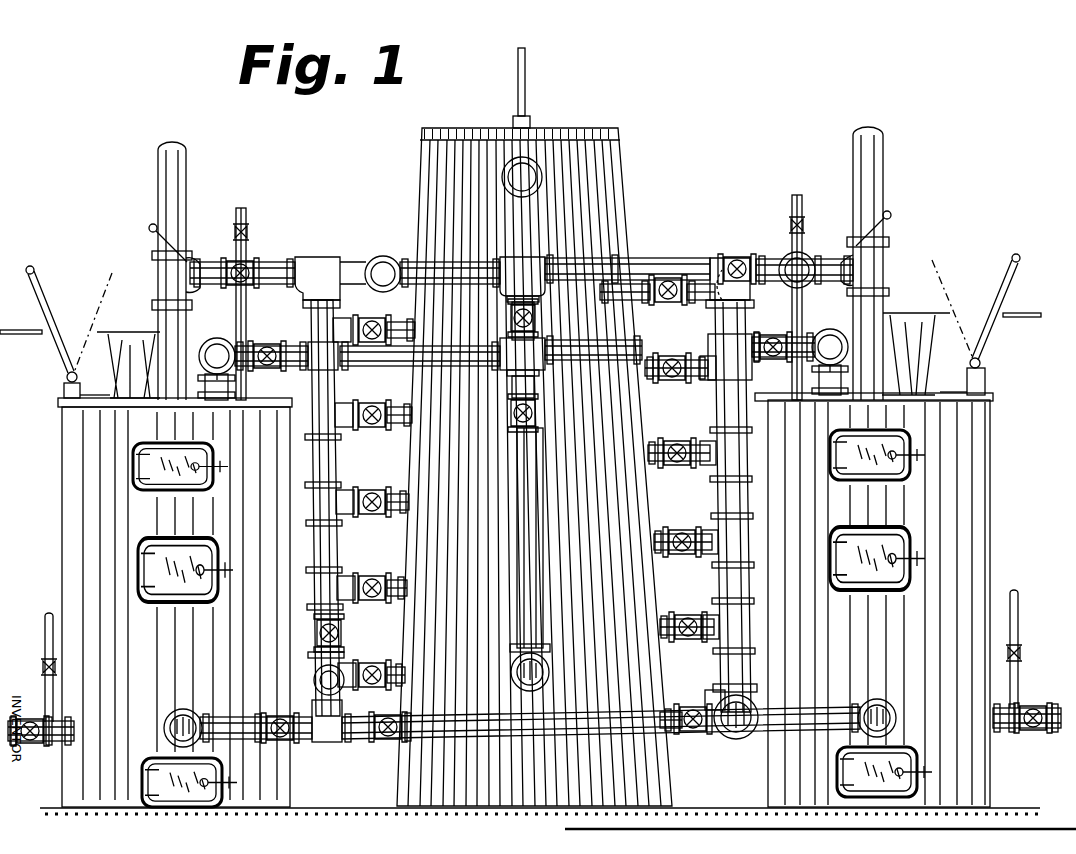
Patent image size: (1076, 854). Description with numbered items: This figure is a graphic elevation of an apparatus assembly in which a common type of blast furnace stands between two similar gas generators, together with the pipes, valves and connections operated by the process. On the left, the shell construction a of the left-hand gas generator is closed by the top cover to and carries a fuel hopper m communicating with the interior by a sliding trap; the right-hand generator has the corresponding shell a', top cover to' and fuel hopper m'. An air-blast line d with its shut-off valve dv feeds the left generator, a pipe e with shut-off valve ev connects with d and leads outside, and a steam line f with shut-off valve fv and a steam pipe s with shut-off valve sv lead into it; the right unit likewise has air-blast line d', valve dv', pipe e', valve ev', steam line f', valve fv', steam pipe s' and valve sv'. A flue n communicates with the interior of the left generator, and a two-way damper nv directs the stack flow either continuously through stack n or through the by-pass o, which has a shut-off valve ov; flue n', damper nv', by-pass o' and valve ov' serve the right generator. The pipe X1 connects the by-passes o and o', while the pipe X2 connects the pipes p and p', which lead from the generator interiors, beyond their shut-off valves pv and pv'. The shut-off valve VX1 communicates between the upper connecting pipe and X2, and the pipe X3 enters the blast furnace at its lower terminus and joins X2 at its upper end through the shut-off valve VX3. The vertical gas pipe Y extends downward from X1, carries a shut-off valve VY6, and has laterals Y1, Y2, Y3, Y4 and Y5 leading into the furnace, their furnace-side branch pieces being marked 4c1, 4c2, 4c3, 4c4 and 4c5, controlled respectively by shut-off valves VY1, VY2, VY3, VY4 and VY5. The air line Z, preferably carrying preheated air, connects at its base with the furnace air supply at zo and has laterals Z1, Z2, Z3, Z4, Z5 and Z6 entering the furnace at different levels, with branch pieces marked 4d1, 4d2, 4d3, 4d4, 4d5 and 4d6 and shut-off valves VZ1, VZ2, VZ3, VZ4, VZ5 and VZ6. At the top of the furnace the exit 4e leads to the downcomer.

The shell construction a is at (162, 602).
The shell construction a' is at (883, 600).
The flue n is at (179, 271).
The flue n' is at (877, 263).
The two way damper nv is at (160, 258).
The two way damper nv' is at (858, 248).
The by-pass o is at (242, 261).
The by-pass o' is at (804, 243).
The shut-off valve ov is at (250, 258).
The shut-off valve ov' is at (737, 243).
The steam pipe s is at (230, 304).
The steam pipe s' is at (781, 297).
The shut-off valve sv is at (252, 223).
The shut-off valve sv' is at (780, 214).
The fuel hopper m is at (128, 350).
The fuel hopper m' is at (916, 342).
The top cover to is at (213, 351).
The top cover to' is at (834, 341).
The pipe p is at (246, 385).
The pipe p' is at (800, 378).
The shut-off valve pv is at (267, 343).
The shut-off valve pv' is at (773, 336).
The pipe X1 is at (432, 265).
The pipe X2 is at (474, 351).
The pipe X3 is at (519, 548).
The shut-off valve VX1 is at (542, 312).
The shut-off valve VX3 is at (506, 418).
The vertical pipe Y is at (316, 382).
The lateral Y1 is at (347, 320).
The lateral Y2 is at (350, 403).
The lateral Y3 is at (350, 490).
The lateral Y4 is at (352, 576).
The lateral Y5 is at (356, 664).
The shut-off valve VY1 is at (371, 346).
The shut-off valve VY2 is at (374, 428).
The shut-off valve VY3 is at (374, 514).
The shut-off valve VY4 is at (373, 601).
The shut-off valve VY5 is at (372, 688).
The shut-off valve VY6 is at (318, 631).
The branch pipe to converter 4c1 is at (428, 320).
The branch pipe to converter 4c2 is at (424, 412).
The branch pipe to converter 4c3 is at (422, 494).
The branch pipe to converter 4c4 is at (418, 582).
The branch pipe to converter 4c5 is at (416, 669).
The air-line Z is at (742, 392).
The lateral Z1 is at (696, 302).
The lateral Z2 is at (706, 382).
The lateral Z3 is at (700, 466).
The lateral Z4 is at (702, 554).
The lateral Z5 is at (704, 639).
The lateral Z6 is at (706, 700).
The shut-off valve VZ1 is at (668, 275).
The shut-off valve VZ2 is at (673, 355).
The shut-off valve VZ3 is at (677, 440).
The shut-off valve VZ4 is at (682, 529).
The shut-off valve VZ5 is at (688, 614).
The shut-off valve VZ6 is at (693, 735).
The branch pipe to converter 4d1 is at (635, 291).
The branch pipe to converter 4d2 is at (647, 372).
The branch pipe to converter 4d3 is at (650, 455).
The branch pipe to converter 4d4 is at (656, 544).
The branch pipe to converter 4d5 is at (662, 628).
The branch pipe to converter 4d6 is at (665, 712).
The furnace air supply connection zo is at (737, 740).
The pipe e is at (238, 719).
The pipe e' is at (619, 711).
The shut-off valve ev is at (278, 715).
The shut-off valve ev' is at (399, 716).
The steam line f is at (35, 662).
The steam line f' is at (1010, 636).
The shut-off valve fv is at (36, 657).
The shut-off valve fv' is at (1026, 639).
The air-blast line d is at (41, 719).
The air-blast line d' is at (1032, 705).
The shut-off valve dv is at (30, 718).
The shut-off valve dv' is at (1034, 700).
The exit to the downcomer 4e is at (527, 170).